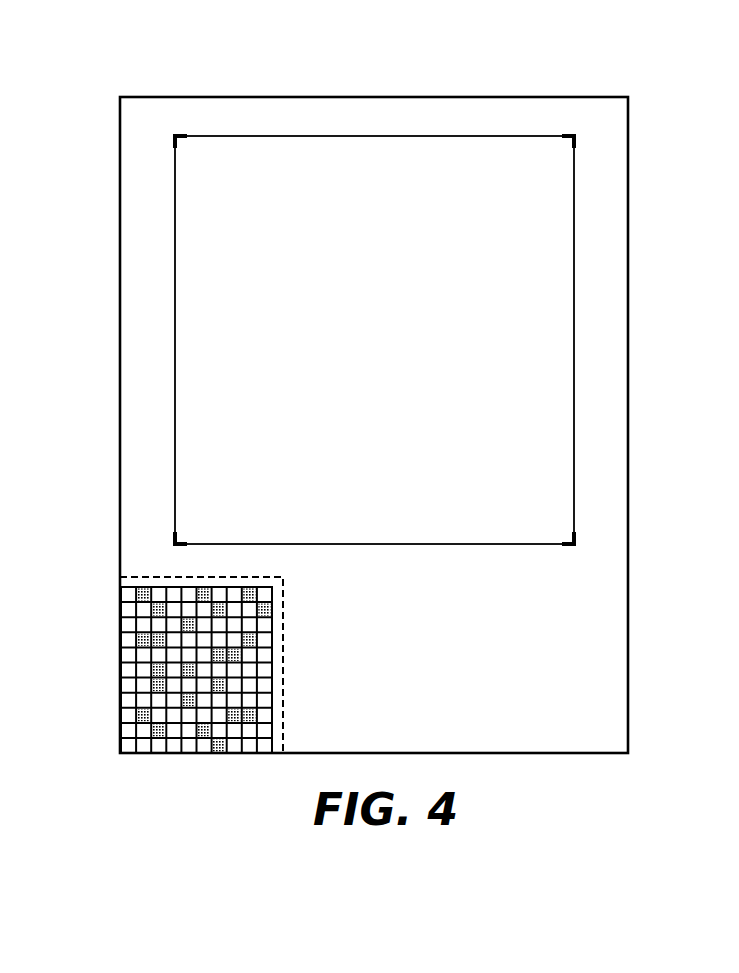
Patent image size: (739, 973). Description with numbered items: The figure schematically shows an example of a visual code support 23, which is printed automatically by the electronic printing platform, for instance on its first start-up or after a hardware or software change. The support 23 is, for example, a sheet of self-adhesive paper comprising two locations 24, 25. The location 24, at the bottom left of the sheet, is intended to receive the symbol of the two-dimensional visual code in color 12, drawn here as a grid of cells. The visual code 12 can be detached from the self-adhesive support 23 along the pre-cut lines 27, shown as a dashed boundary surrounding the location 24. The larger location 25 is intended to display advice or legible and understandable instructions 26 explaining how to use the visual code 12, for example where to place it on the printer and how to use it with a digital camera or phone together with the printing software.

The 2D visual code in color 12 is at (243, 622).
The support 23 is at (120, 303).
The location 24 is at (141, 582).
The location 25 is at (513, 136).
The instructions 26 is at (380, 210).
The pre-cut lines 27 is at (285, 617).